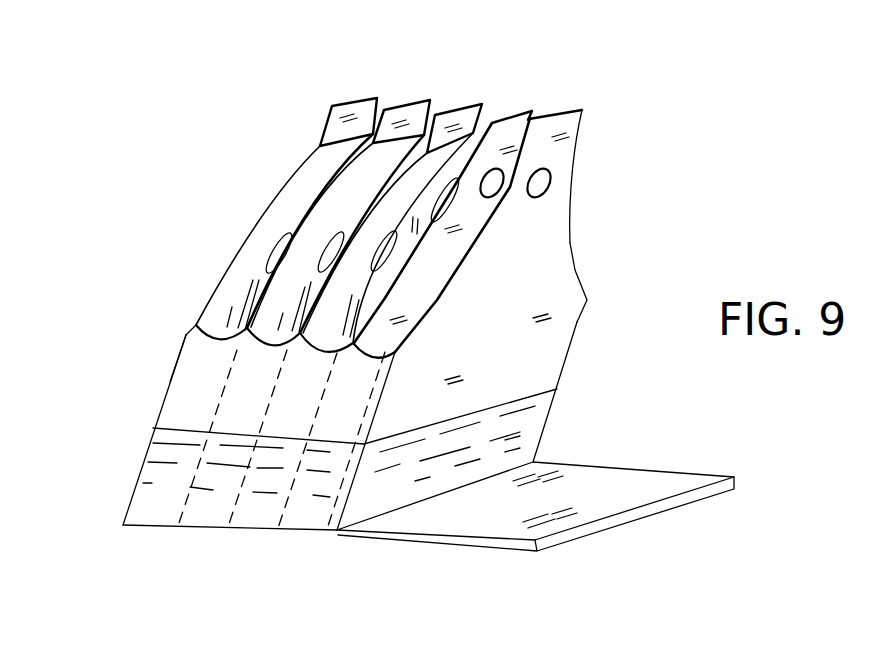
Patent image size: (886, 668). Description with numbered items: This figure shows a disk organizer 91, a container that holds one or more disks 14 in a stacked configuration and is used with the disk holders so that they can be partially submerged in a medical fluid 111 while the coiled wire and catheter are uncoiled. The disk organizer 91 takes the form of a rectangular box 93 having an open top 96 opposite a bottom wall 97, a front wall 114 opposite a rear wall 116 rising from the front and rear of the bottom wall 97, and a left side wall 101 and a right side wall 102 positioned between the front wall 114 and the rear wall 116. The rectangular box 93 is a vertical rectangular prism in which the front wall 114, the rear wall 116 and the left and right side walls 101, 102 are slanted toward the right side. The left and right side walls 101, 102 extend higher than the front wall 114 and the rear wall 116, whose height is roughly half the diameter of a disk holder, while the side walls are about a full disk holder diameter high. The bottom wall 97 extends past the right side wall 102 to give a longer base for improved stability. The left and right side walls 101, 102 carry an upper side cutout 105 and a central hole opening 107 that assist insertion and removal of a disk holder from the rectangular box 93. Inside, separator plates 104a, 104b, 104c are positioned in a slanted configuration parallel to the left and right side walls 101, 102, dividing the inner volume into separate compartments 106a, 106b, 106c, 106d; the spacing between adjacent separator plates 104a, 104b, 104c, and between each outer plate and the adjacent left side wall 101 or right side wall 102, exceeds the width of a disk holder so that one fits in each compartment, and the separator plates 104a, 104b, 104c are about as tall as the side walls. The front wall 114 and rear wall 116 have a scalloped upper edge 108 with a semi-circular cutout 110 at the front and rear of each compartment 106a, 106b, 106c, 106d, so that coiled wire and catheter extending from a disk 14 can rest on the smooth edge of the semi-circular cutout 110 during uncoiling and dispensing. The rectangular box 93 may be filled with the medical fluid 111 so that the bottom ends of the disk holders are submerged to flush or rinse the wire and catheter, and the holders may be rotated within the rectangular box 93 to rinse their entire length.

The disk organizer 91 is at (72, 184).
The disk 14 is at (291, 182).
The rectangular box 93 is at (183, 381).
The open top 96 is at (497, 131).
The bottom wall 97 is at (226, 538).
The left side wall 101 is at (172, 353).
The right side wall 102 is at (537, 378).
The separator plate 104a is at (398, 108).
The separator plate 104b is at (450, 163).
The separator plate 104c is at (518, 112).
The upper side cutout 105 is at (575, 163).
The central hole opening 107 is at (551, 182).
The scalloped upper edge 108 is at (215, 333).
The semi-circular cutout 110 is at (395, 352).
The medical fluid 111 is at (152, 472).
The front wall 114 is at (200, 411).
The rear wall 116 is at (585, 333).
The compartment 106a is at (143, 508).
The compartment 106b is at (207, 513).
The compartment 106c is at (255, 515).
The compartment 106d is at (310, 522).